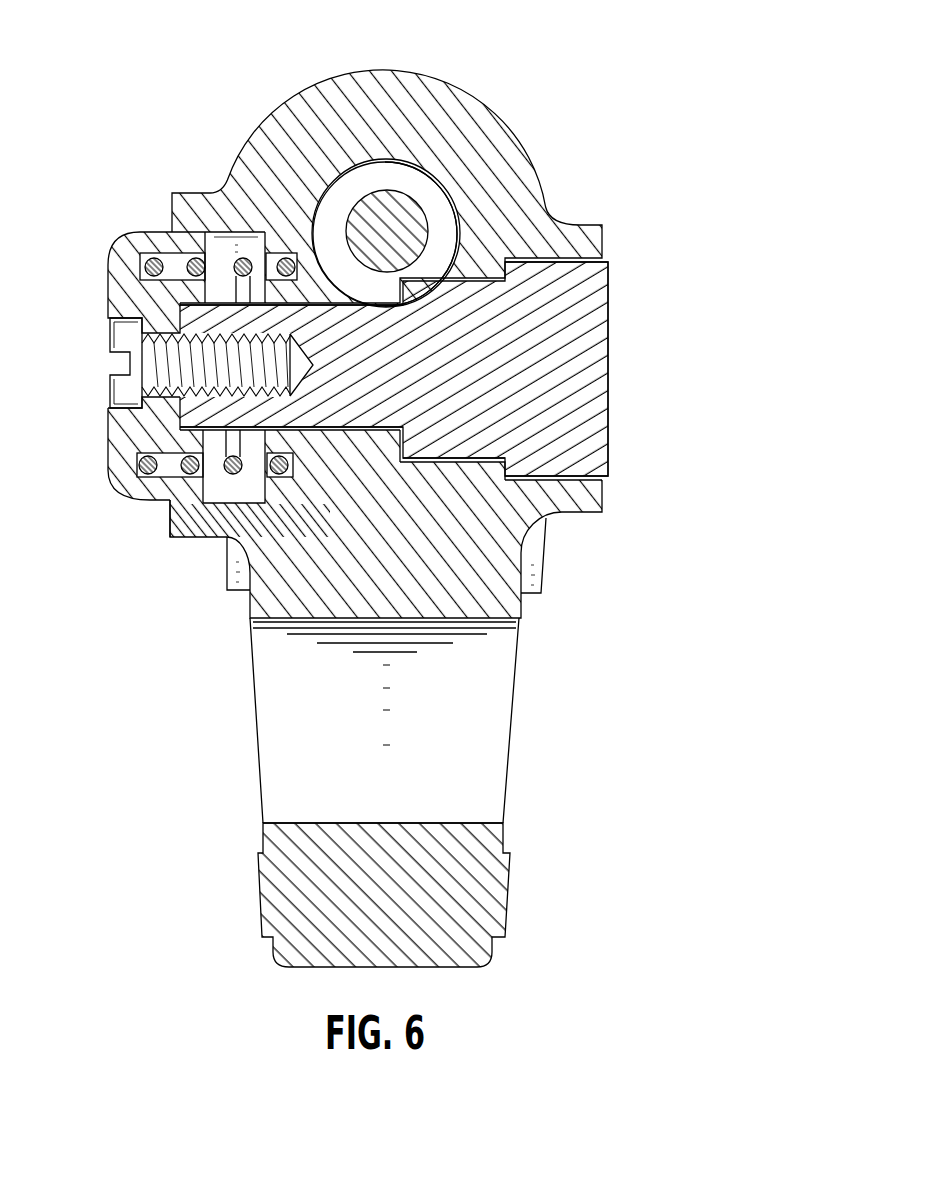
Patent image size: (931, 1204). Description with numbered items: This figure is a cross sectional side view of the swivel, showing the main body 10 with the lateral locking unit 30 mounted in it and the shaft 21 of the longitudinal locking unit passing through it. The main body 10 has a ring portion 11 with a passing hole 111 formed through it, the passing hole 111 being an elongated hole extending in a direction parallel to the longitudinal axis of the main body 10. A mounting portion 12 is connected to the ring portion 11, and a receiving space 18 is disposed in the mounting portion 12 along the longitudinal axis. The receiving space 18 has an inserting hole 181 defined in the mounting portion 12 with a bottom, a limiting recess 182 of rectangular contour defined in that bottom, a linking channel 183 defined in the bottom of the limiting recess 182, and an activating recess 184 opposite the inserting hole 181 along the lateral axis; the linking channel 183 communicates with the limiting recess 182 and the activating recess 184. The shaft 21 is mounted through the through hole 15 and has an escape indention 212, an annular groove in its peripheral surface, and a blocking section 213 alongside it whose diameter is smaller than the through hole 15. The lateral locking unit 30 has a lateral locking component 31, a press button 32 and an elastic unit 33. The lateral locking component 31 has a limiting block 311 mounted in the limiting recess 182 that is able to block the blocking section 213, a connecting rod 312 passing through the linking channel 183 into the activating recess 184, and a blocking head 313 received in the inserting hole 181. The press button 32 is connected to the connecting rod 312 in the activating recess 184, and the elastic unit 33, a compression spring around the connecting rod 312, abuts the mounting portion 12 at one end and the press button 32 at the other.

The main body 10 is at (541, 960).
The ring portion 11 is at (516, 883).
The passing hole 111 is at (283, 822).
The mounting portion 12 is at (396, 88).
The through hole 15 is at (312, 240).
The receiving space 18 is at (608, 239).
The inserting hole 181 is at (590, 477).
The limiting recess 182 is at (490, 460).
The linking channel 183 is at (318, 430).
The activating recess 184 is at (173, 495).
The shaft 21 is at (415, 162).
The escape indention 212 is at (371, 207).
The blocking section 213 is at (440, 230).
The lateral locking unit 30 is at (651, 317).
The lateral locking component 31 is at (621, 398).
The limiting block 311 is at (440, 457).
The connecting rod 312 is at (195, 317).
The blocking head 313 is at (585, 363).
The press button 32 is at (120, 434).
The elastic unit 33 is at (150, 264).